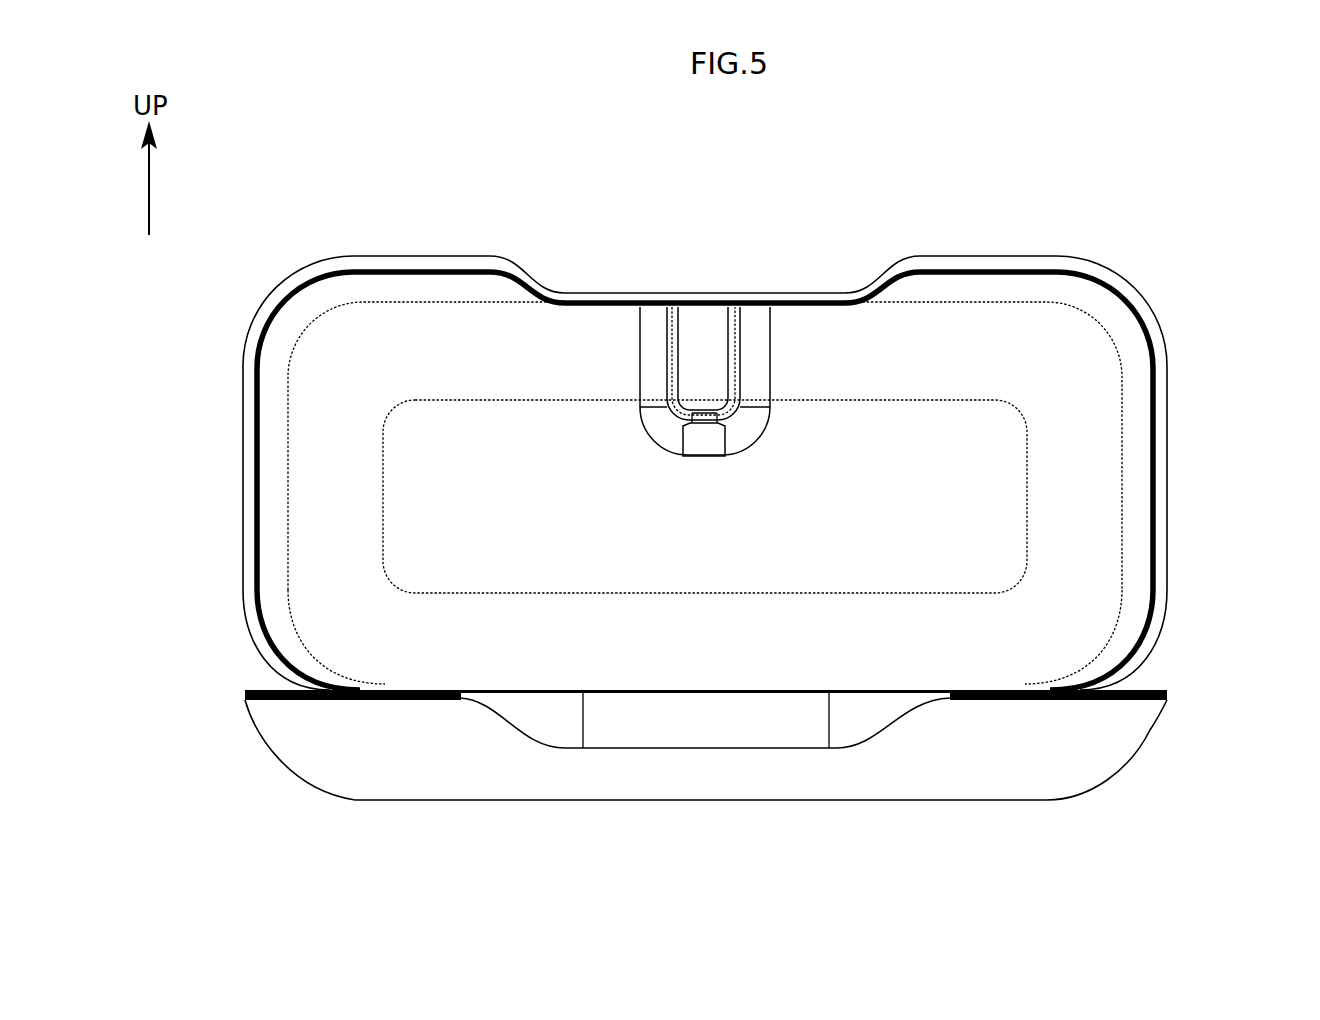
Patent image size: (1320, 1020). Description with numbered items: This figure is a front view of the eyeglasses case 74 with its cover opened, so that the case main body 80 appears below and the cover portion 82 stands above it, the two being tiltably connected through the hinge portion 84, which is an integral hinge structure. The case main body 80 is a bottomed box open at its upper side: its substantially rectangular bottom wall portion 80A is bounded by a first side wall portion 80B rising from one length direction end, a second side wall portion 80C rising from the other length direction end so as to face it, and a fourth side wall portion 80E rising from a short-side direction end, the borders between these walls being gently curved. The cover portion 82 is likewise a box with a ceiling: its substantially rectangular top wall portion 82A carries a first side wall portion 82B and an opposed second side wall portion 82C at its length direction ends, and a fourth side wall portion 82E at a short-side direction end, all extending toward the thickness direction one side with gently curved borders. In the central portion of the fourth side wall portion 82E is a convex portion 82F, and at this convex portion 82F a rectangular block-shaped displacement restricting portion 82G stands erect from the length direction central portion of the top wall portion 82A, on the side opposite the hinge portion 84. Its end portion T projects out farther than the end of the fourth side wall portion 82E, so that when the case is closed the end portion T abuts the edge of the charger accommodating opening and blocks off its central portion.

The eyeglasses case 74 is at (1022, 166).
The cover portion 82 is at (1132, 283).
The top wall portion 82A is at (977, 468).
The first side wall portion 82B is at (243, 442).
The second side wall portion 82C is at (1167, 517).
The fourth side wall portion 82E is at (413, 256).
The convex portion 82F is at (611, 305).
The displacement restricting portion 82G is at (735, 347).
The end portion T is at (698, 333).
The case main body 80 is at (1100, 790).
The bottom wall portion 80A is at (733, 800).
The first side wall portion 80B is at (262, 728).
The second side wall portion 80C is at (1150, 735).
The fourth side wall portion 80E is at (445, 782).
The hinge portion 84 is at (540, 688).